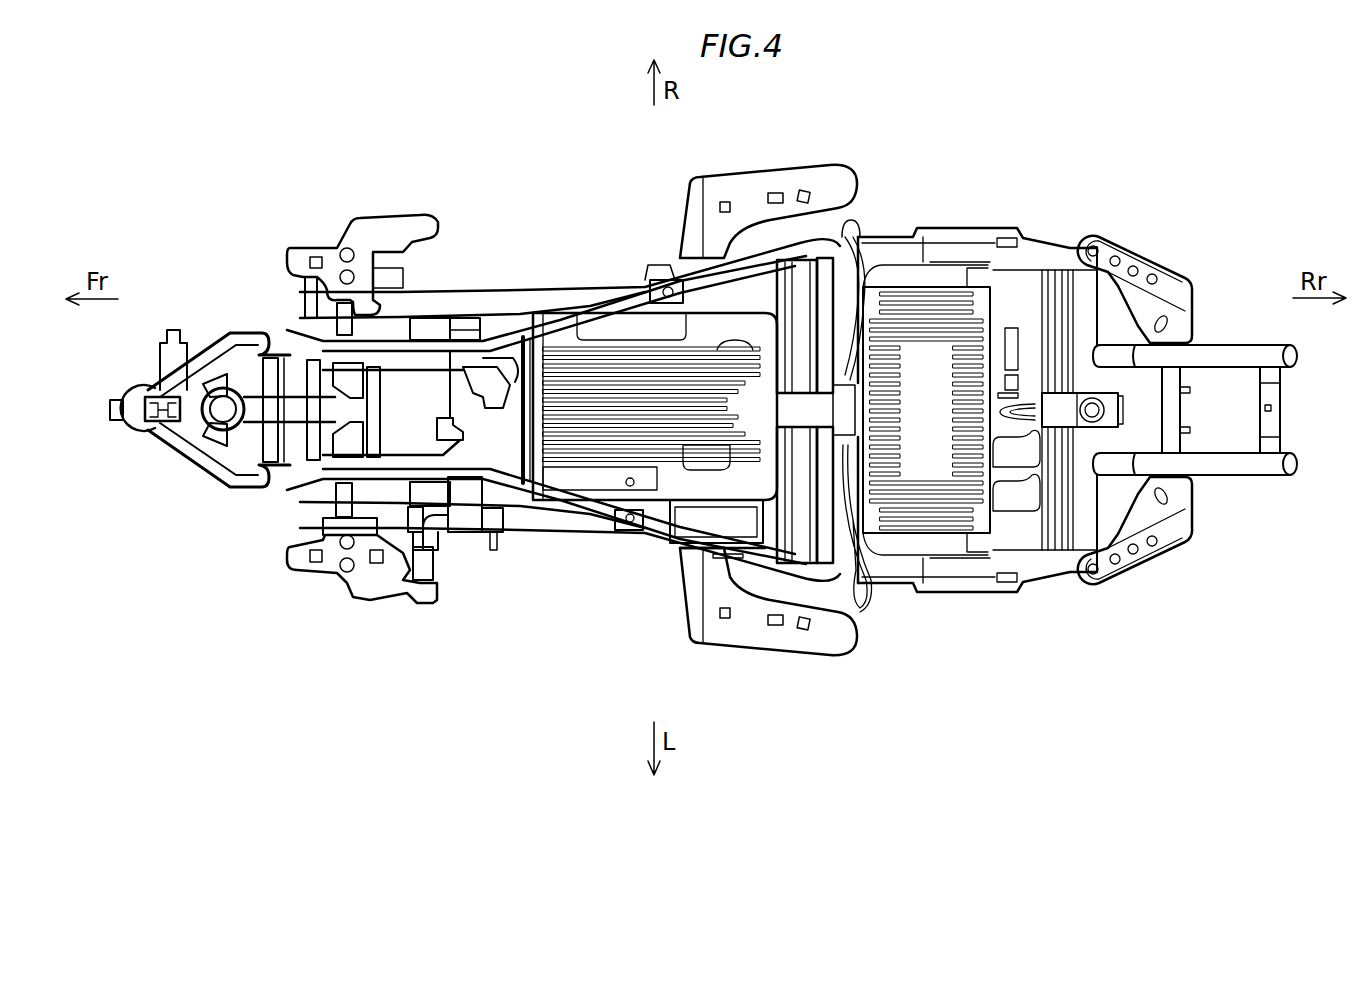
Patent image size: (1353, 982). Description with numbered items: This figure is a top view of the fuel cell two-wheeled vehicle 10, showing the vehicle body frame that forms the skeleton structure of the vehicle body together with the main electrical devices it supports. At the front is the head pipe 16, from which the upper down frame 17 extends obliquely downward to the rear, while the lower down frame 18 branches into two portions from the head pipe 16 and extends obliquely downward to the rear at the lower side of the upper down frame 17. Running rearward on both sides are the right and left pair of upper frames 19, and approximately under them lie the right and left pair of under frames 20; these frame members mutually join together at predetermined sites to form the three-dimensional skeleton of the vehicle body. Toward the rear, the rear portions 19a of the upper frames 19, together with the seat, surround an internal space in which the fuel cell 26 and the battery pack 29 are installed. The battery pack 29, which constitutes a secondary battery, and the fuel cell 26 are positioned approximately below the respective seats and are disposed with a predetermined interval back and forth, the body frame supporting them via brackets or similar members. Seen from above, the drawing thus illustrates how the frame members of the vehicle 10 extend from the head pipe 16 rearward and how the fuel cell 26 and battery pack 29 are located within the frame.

The fuel cell two-wheeled vehicle 10 is at (766, 143).
The head pipe 16 is at (193, 412).
The upper down frame 17 is at (292, 410).
The lower down frame 18 is at (310, 347).
The upper frames 19 is at (428, 352).
The rear portions of the upper frames 19a is at (1113, 343).
The under frames 20 is at (522, 290).
The fuel cell 26 is at (923, 373).
The battery pack 29 is at (713, 327).